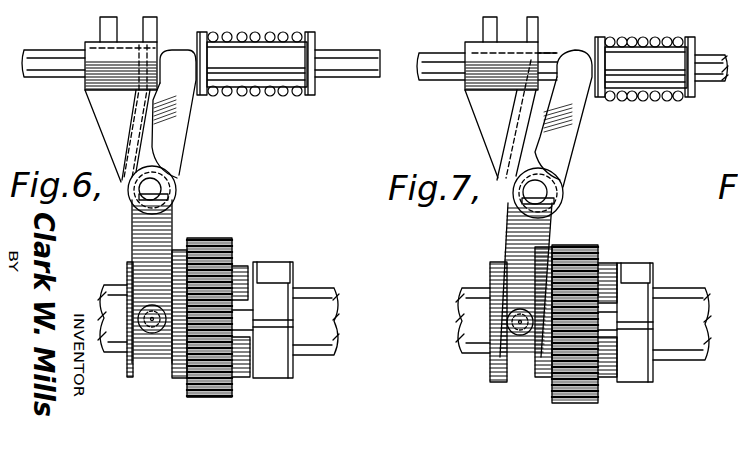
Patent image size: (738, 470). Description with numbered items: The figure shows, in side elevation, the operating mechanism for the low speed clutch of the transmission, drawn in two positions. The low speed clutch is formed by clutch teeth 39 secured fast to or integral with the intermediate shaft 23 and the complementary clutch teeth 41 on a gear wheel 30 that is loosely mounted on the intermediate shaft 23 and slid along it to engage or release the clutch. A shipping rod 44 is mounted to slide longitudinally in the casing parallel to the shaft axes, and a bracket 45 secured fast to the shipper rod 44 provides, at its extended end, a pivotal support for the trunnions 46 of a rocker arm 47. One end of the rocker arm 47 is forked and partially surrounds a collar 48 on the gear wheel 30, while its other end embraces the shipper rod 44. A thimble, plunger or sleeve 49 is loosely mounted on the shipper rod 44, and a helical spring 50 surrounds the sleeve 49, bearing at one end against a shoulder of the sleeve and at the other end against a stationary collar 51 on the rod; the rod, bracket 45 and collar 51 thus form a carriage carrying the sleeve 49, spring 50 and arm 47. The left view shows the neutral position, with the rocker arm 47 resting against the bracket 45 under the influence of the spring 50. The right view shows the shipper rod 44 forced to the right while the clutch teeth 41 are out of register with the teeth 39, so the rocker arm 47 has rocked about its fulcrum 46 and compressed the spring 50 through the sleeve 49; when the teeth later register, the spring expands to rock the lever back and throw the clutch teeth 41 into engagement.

In FIG. 6, the intermediate shaft 23 is at (320, 297).
In FIG. 7, the intermediate shaft 23 is at (688, 298).
In FIG. 6, the gear wheel 30 is at (213, 390).
In FIG. 7, the gear wheel 30 is at (583, 396).
In FIG. 6, the clutch teeth 39 is at (278, 265).
In FIG. 7, the clutch teeth 39 is at (640, 266).
In FIG. 6, the clutch teeth 41 is at (242, 266).
In FIG. 7, the clutch teeth 41 is at (606, 272).
In FIG. 6, the shipping rod 44 is at (336, 58).
In FIG. 7, the shipping rod 44 is at (572, 67).
In FIG. 6, the bracket 45 is at (108, 128).
In FIG. 7, the bracket 45 is at (478, 70).
In FIG. 6, the trunnions 46 is at (158, 188).
In FIG. 7, the trunnions 46 is at (550, 192).
In FIG. 6, the rocker arm 47 is at (172, 136).
In FIG. 7, the rocker arm 47 is at (553, 226).
In FIG. 6, the collar 48 is at (158, 359).
In FIG. 7, the collar 48 is at (525, 364).
In FIG. 6, the sleeve 49 is at (243, 50).
In FIG. 7, the sleeve 49 is at (653, 58).
In FIG. 6, the helical spring 50 is at (257, 92).
In FIG. 7, the helical spring 50 is at (645, 98).
In FIG. 6, the stationary collar 51 is at (308, 36).
In FIG. 7, the stationary collar 51 is at (700, 46).